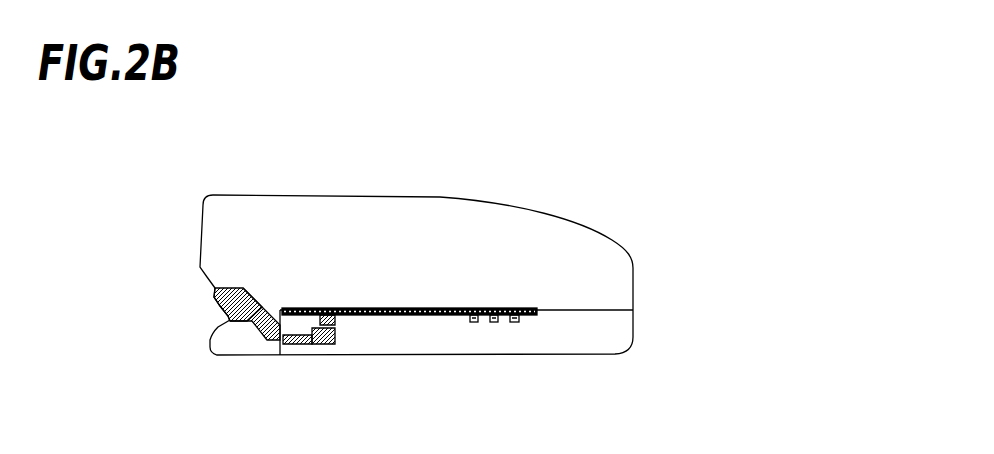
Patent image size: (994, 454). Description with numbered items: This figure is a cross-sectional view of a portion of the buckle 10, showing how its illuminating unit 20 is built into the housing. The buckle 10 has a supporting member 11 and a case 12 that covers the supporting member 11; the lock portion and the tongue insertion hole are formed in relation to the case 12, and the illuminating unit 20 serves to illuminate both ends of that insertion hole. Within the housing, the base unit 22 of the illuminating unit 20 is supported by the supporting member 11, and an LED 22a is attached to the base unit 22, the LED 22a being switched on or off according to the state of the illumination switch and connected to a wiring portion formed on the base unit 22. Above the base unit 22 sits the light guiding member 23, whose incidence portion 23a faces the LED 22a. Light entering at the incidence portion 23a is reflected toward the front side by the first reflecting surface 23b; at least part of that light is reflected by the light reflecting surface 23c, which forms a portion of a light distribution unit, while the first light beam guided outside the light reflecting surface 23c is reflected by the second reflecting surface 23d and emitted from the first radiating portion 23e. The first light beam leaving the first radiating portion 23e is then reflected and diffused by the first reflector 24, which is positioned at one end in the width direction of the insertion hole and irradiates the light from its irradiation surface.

The buckle 10 is at (500, 170).
The supporting member 11 is at (578, 337).
The case 12 is at (555, 228).
The illuminating unit 20 is at (308, 288).
The base unit 22 is at (407, 314).
The LED 22a is at (403, 314).
The light guiding member 23 is at (215, 280).
The incidence portion 23a is at (337, 320).
The first reflecting surface 23b is at (332, 333).
The light reflecting surface 23c is at (300, 344).
The second reflecting surface 23d is at (270, 344).
The first radiating portion 23e is at (257, 328).
The first reflector 24 is at (215, 296).